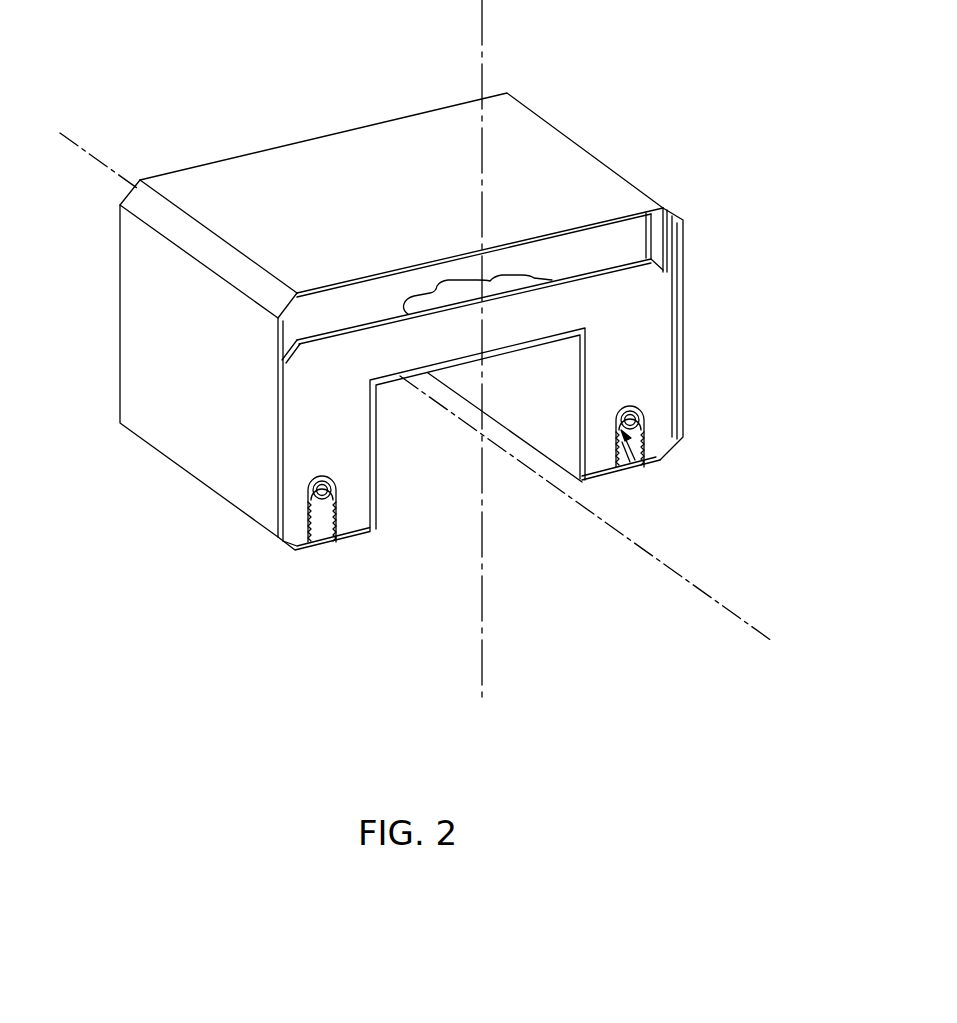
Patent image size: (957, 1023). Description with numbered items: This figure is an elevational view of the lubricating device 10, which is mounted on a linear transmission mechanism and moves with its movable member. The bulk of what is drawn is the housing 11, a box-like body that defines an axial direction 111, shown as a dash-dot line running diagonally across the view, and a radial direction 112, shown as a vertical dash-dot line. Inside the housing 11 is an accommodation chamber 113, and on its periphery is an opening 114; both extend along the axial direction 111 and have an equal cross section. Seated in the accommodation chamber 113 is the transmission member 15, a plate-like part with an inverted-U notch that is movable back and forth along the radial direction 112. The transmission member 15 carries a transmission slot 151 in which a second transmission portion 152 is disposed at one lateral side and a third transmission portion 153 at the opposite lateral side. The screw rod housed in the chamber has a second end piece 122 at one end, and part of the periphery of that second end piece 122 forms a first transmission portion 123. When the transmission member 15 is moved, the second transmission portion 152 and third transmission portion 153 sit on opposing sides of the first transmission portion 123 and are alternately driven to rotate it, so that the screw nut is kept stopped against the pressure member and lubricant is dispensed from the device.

The lubricating device 10 is at (601, 143).
The housing 11 is at (567, 135).
The axial direction 111 is at (697, 586).
The radial direction 112 is at (480, 47).
The accommodation chamber 113 is at (585, 253).
The opening 114 is at (673, 213).
The transmission member 15 is at (640, 296).
The second end piece 122 is at (640, 419).
The first transmission portion 123 is at (637, 457).
The transmission slot 151 is at (628, 442).
The second transmission portion 152 is at (623, 452).
The third transmission portion 153 is at (643, 437).